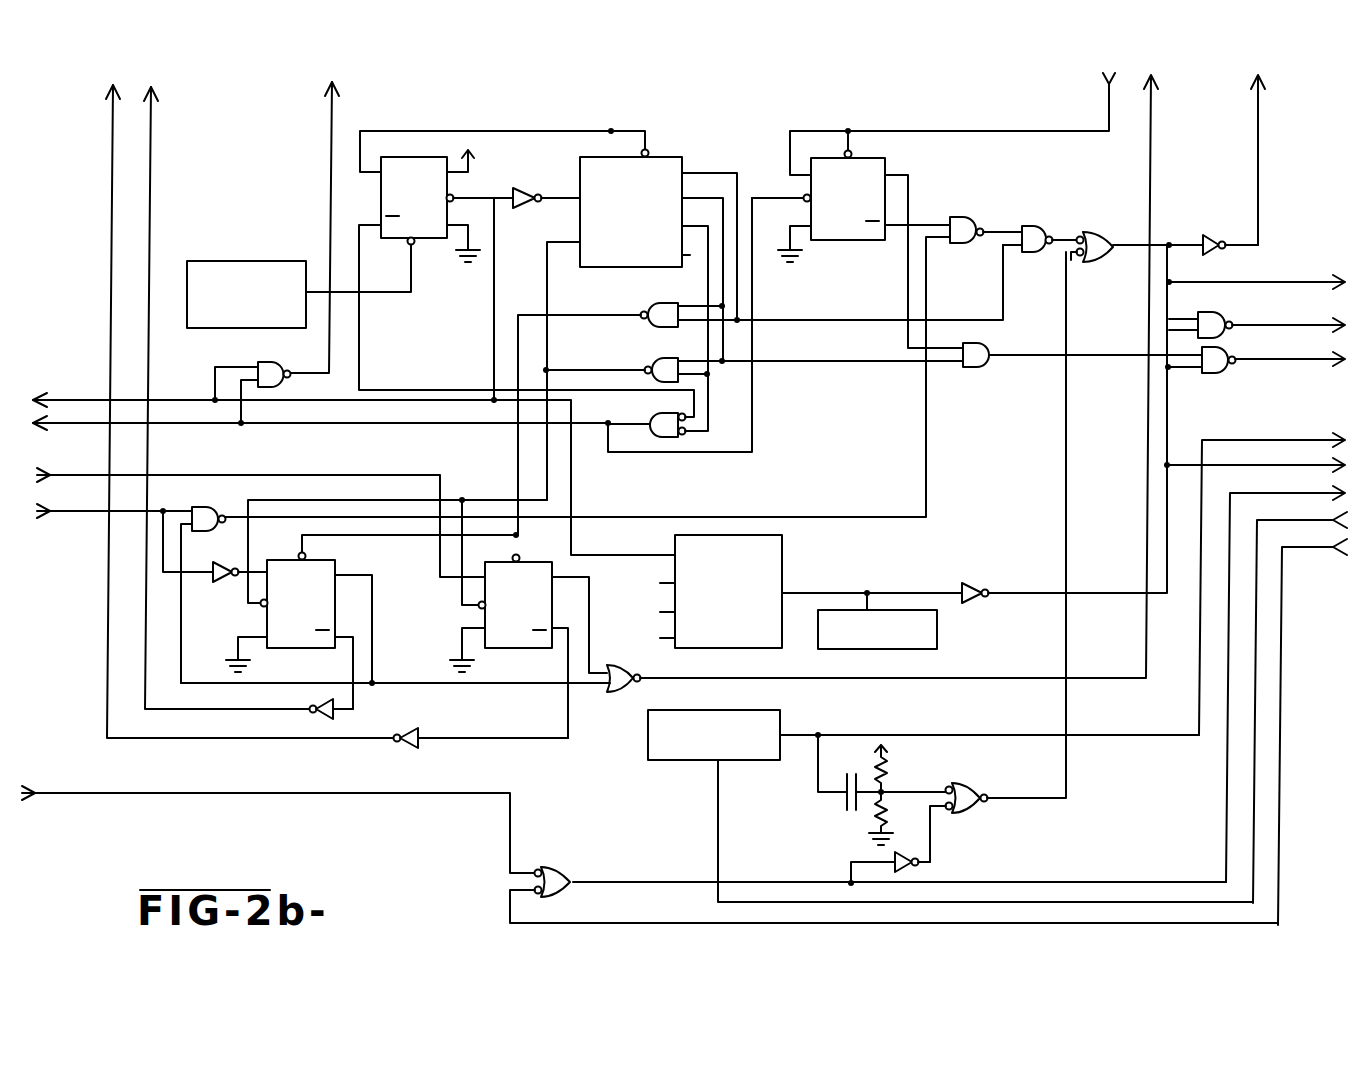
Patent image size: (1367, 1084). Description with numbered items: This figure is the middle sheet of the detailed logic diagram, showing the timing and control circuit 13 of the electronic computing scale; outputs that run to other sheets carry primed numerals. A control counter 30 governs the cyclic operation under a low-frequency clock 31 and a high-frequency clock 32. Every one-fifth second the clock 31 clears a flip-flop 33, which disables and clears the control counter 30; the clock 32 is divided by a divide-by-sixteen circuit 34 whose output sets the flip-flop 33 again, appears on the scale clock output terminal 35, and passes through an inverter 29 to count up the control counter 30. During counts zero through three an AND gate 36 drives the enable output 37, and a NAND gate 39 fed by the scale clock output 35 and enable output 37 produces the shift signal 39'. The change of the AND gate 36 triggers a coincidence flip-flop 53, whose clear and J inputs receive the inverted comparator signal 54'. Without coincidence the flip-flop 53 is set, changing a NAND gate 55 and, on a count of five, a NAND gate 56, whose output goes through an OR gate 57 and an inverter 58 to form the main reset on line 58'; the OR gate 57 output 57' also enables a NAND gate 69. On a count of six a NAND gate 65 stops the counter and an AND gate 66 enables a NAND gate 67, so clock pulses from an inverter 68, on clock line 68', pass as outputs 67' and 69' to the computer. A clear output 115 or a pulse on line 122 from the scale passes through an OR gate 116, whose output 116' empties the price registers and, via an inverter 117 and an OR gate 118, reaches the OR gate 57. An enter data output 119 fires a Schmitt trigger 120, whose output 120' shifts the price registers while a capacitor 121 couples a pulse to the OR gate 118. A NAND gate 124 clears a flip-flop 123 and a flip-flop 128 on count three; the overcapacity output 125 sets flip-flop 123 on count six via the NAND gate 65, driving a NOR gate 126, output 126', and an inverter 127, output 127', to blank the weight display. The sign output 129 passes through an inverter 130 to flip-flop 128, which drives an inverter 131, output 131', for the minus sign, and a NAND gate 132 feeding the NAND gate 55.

The timing and control circuit 13 is at (90, 270).
The inverter 29 is at (540, 182).
The control counter 30 is at (614, 270).
The clock 31 is at (240, 262).
The clock 32 is at (938, 631).
The flip-flop 33 is at (416, 245).
The divide-by-sixteen circuit 34 is at (782, 543).
The scale clock output terminal 35 is at (92, 398).
The AND gate 36 is at (660, 413).
The enable output 37 is at (64, 424).
The NAND gate 39 is at (245, 383).
The output of NAND gate 39 39' is at (342, 227).
The coincidence flip-flop 53 is at (836, 241).
The output of inverter 54 54' is at (981, 102).
The NAND gate 55 is at (958, 222).
The NAND gate 56 is at (1028, 228).
The OR gate 57 is at (1137, 260).
The output of OR gate 57 57' is at (1255, 271).
The inverter 58 is at (1221, 229).
The main reset line 58' is at (1275, 160).
The NAND gate 65 is at (664, 358).
The AND gate 66 is at (970, 369).
The NAND gate 67 is at (1210, 373).
The output of NAND gate 67 67' is at (1290, 350).
The inverter 68 is at (1064, 424).
The clock line 68' is at (1254, 457).
The NAND gate 69 is at (1211, 315).
The output of NAND gate 69 69' is at (1288, 317).
The clear output 115 is at (1320, 547).
The OR gate 116 is at (894, 875).
The output of OR gate 116 116' is at (1285, 675).
The inverter 117 is at (907, 870).
The OR gate 118 is at (968, 812).
The enter data output 119 is at (1300, 520).
The Schmitt trigger 120 is at (936, 806).
The output of Schmitt trigger 120 120' is at (1272, 576).
The capacitor 121 is at (842, 800).
The line 122 is at (58, 793).
The flip-flop 123 is at (535, 650).
The NAND gate 124 is at (672, 288).
The overcapacity output 125 is at (97, 463).
The NOR gate 126 is at (663, 686).
The output of NOR gate 126 126' is at (1181, 376).
The inverter 127 is at (456, 755).
The output of inverter 127 127' is at (223, 411).
The flip-flop 128 is at (336, 562).
The sign output 129 is at (95, 514).
The inverter 130 is at (229, 580).
The inverter 131 is at (301, 719).
The output of inverter 131 131' is at (228, 398).
The NAND gate 132 is at (218, 506).